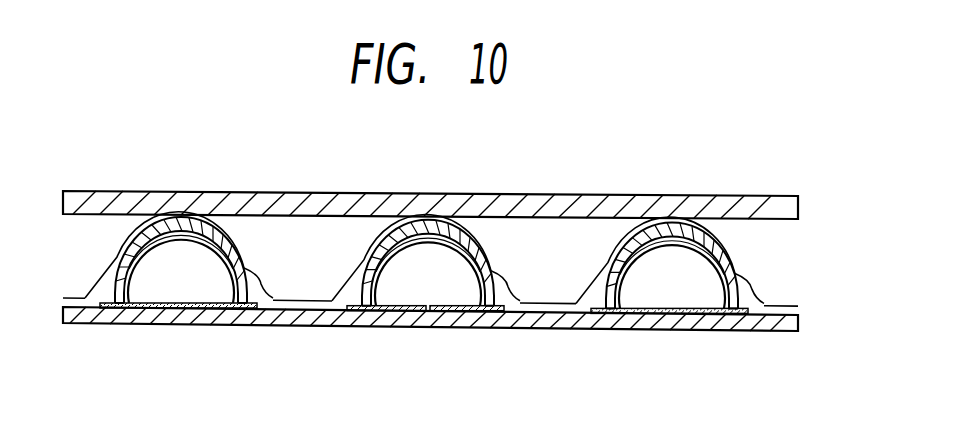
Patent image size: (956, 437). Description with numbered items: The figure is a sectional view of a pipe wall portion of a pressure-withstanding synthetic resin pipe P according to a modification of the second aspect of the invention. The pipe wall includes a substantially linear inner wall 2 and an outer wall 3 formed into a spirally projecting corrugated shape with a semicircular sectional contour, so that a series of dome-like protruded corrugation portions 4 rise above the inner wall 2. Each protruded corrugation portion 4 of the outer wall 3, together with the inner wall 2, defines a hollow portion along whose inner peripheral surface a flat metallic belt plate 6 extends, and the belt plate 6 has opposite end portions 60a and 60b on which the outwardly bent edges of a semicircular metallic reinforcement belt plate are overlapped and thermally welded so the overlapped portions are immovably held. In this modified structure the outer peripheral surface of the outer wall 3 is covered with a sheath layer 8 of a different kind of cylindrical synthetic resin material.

The pressure-withstanding synthetic resin pipe P is at (112, 183).
The inner wall 2 is at (197, 315).
The outer wall 3 is at (188, 218).
The protruded corrugation portion 4 is at (447, 220).
The flat metallic belt plate 6 is at (437, 328).
The sheath layer 8 is at (340, 200).
The end portion of the metallic belt plate 60a is at (367, 326).
The end portion of the metallic belt plate 60b is at (508, 328).